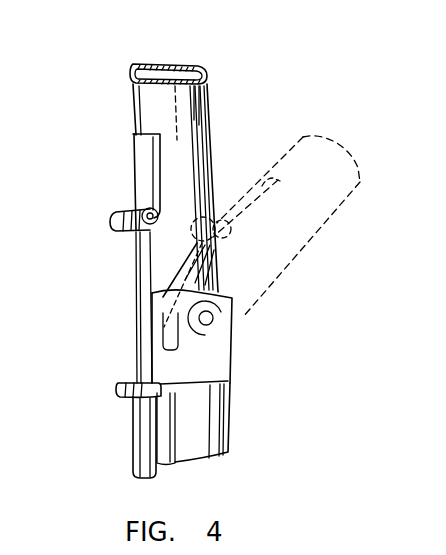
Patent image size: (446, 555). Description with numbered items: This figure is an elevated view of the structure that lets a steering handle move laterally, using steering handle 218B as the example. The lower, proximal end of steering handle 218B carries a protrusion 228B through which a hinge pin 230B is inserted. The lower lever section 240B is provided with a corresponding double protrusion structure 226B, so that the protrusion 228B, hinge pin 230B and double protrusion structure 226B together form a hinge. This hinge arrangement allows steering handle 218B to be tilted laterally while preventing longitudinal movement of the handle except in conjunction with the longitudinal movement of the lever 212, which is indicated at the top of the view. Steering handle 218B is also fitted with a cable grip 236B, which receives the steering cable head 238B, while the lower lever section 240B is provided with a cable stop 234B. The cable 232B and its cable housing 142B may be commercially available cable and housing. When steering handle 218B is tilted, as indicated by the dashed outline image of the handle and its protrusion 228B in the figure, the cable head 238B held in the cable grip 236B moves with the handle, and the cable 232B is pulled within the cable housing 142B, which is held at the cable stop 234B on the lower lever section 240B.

The lever 212 is at (213, 62).
The steering handle 218B is at (193, 116).
The protrusion 228B is at (235, 295).
The hinge pin 230B is at (212, 319).
The double protrusion structure 226B is at (212, 350).
The cable 232B is at (137, 312).
The cable stop 234B is at (118, 387).
The cable grip 236B is at (111, 224).
The steering cable head 238B is at (142, 211).
The lower lever section 240B is at (218, 413).
The cable housing 142B is at (140, 441).